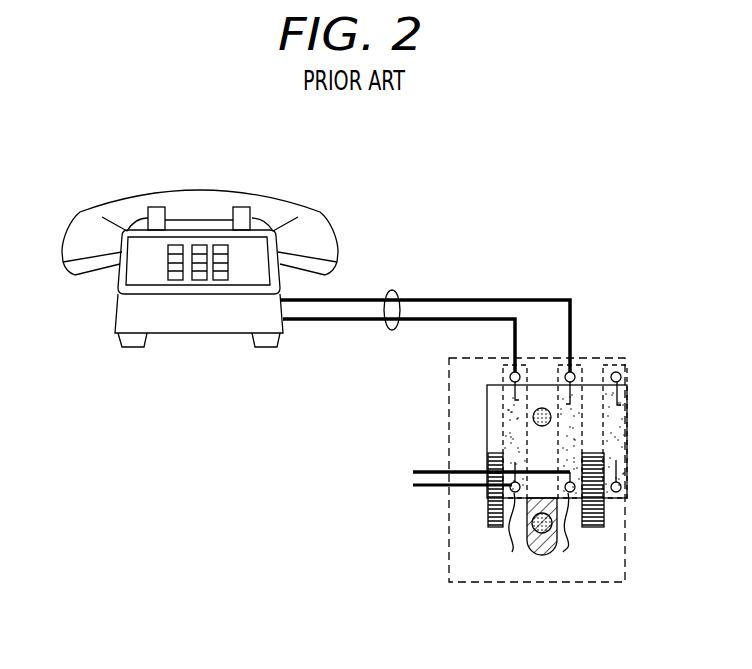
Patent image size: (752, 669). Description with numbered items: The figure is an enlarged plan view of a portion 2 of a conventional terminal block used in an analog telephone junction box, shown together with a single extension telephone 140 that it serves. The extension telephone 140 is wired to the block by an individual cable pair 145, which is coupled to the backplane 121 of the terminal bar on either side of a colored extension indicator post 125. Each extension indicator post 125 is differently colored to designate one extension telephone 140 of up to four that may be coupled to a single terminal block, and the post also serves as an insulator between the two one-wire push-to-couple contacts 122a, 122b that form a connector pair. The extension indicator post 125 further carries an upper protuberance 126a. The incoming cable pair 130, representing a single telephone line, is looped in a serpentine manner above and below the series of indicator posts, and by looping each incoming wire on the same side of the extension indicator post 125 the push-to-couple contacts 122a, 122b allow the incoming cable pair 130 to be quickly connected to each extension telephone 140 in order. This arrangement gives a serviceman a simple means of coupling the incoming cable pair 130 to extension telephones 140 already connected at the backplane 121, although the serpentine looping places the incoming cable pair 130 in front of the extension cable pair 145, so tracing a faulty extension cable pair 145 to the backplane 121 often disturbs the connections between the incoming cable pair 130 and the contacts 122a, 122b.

The extension telephone 140 is at (200, 200).
The cable pair 145 is at (397, 290).
The portion 2—2 of the terminal block 2 is at (450, 360).
The backplane 121 is at (642, 357).
The incoming cable pair 130 is at (412, 455).
The one-wire push-to-couple contact 122a is at (492, 535).
The one-wire push-to-couple contact 122b is at (584, 535).
The extension indicator post 125 is at (550, 555).
The upper protuberance 126a is at (537, 552).